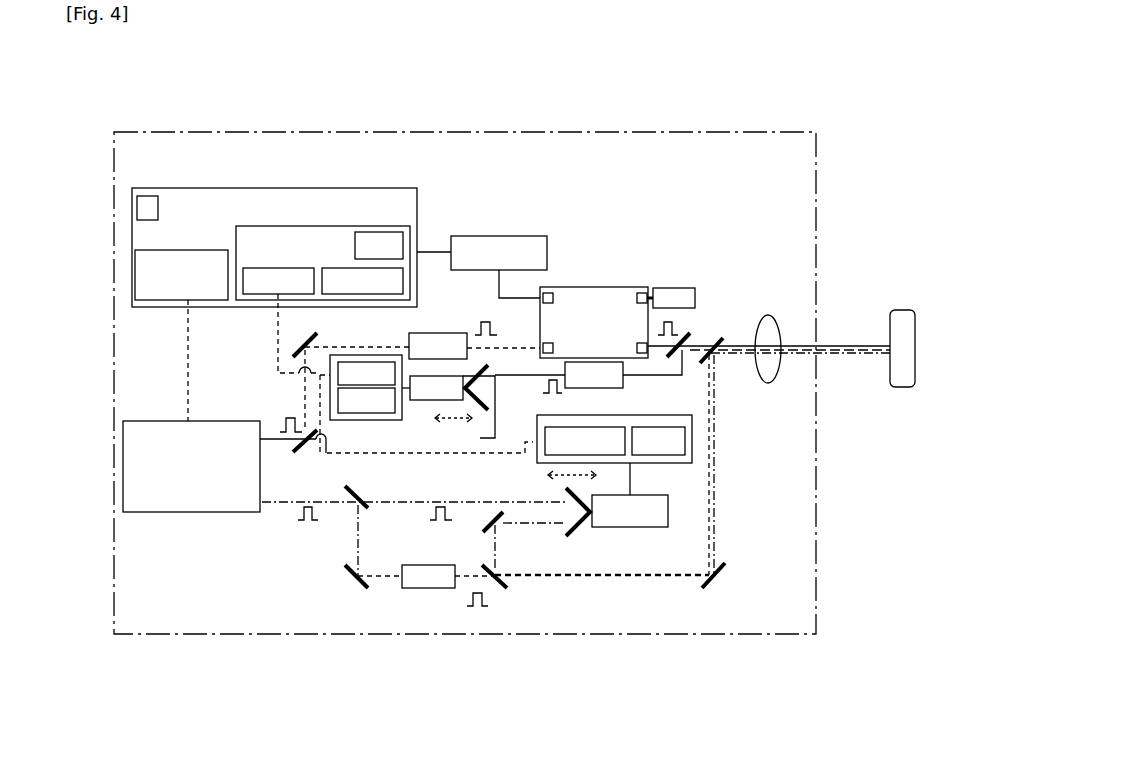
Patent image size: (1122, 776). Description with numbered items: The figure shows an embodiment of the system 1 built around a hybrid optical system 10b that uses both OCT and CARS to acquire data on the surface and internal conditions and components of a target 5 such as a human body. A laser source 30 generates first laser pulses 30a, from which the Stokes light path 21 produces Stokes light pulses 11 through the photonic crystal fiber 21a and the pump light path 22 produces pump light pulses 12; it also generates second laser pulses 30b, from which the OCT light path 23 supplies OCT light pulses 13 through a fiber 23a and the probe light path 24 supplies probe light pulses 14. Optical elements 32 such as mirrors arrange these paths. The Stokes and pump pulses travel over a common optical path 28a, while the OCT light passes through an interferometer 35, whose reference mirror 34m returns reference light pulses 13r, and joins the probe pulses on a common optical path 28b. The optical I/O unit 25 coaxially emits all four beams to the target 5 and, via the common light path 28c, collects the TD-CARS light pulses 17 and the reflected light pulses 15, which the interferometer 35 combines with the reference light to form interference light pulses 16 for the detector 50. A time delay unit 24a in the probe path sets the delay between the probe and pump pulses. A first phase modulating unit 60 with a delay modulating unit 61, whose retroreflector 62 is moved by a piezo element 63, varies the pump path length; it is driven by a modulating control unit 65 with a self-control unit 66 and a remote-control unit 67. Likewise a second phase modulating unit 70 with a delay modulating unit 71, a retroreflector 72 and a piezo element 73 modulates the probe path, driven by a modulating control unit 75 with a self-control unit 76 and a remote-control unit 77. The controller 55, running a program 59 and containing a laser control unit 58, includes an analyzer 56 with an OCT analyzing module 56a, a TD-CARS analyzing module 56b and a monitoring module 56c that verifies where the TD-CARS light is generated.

The system 1 is at (762, 155).
The target 5 is at (906, 303).
The optical system 10b is at (729, 509).
The Stokes light pulses 11 is at (483, 606).
The pump light pulses 12 is at (430, 514).
The OCT light pulses 13 is at (497, 335).
The reference light pulses 13r is at (651, 294).
The probe light pulses 14 is at (543, 391).
The reflected light pulses 15 is at (702, 339).
The interference light pulses 16 is at (503, 284).
The CARS light pulses 17 is at (840, 345).
The Stokes light path 21 is at (378, 596).
The photonic crystal fiber 21a is at (430, 589).
The pump light path 22 is at (459, 533).
The OCT light path 23 is at (478, 312).
The fiber 23a is at (437, 333).
The probe light path 24 is at (512, 414).
The time delay unit 24a is at (623, 384).
The optical I/O unit 25 is at (768, 383).
The common optical path 28a is at (761, 506).
The common optical path 28b is at (715, 335).
The common light path 28c is at (730, 368).
The laser source 30 is at (203, 516).
The first laser pulses 30a is at (298, 520).
The second laser pulses 30b is at (280, 428).
The optical elements 32 is at (741, 590).
The reference mirror 34m is at (676, 288).
The interferometer 35 is at (605, 281).
The detector 50 is at (478, 236).
The controller 55 is at (263, 196).
The analyzer 56 is at (322, 226).
The OCT analyzing module 56a is at (378, 232).
The TD-CARS analyzing module 56b is at (334, 268).
The monitoring module 56c is at (253, 294).
The laser control unit 58 is at (143, 300).
The program 59 is at (150, 196).
The first phase modulating unit 60 is at (590, 541).
The delay modulating unit 61 is at (616, 539).
The retroreflector 62 is at (565, 527).
The piezo element 63 is at (643, 527).
The modulating control unit 65 is at (690, 460).
The self-control unit 66 is at (685, 433).
The remote-control unit 67 is at (565, 427).
The second phase modulating unit 70 is at (410, 423).
The delay modulating unit 71 is at (424, 415).
The retroreflector 72 is at (480, 410).
The piezo element 73 is at (413, 400).
The modulating control unit 75 is at (378, 388).
The self-control unit 76 is at (330, 404).
The remote-control unit 77 is at (345, 362).